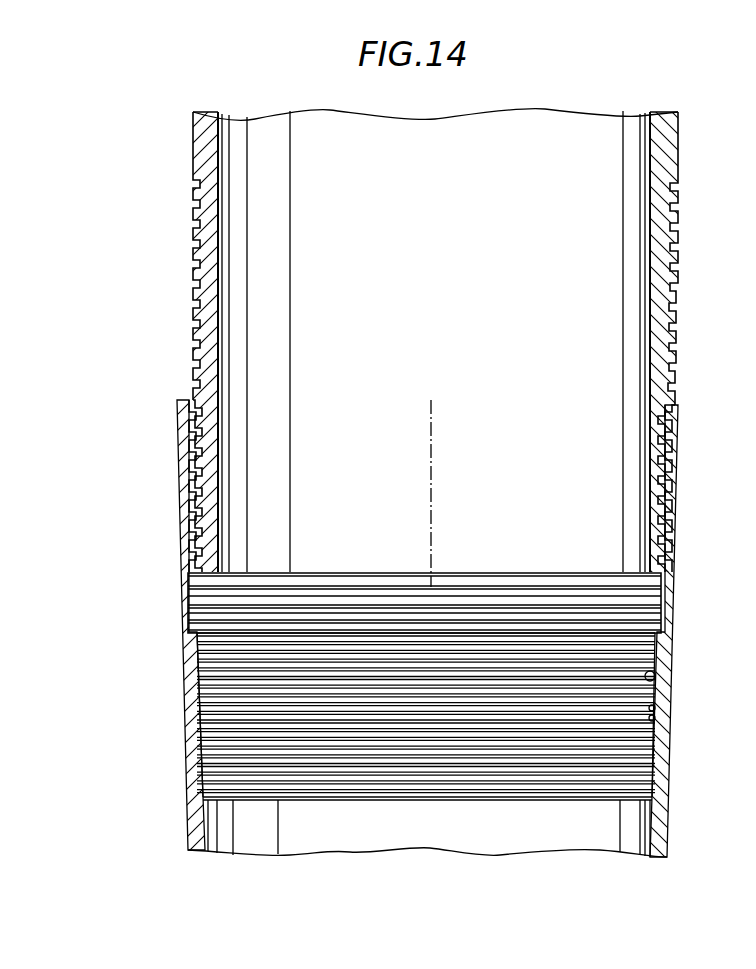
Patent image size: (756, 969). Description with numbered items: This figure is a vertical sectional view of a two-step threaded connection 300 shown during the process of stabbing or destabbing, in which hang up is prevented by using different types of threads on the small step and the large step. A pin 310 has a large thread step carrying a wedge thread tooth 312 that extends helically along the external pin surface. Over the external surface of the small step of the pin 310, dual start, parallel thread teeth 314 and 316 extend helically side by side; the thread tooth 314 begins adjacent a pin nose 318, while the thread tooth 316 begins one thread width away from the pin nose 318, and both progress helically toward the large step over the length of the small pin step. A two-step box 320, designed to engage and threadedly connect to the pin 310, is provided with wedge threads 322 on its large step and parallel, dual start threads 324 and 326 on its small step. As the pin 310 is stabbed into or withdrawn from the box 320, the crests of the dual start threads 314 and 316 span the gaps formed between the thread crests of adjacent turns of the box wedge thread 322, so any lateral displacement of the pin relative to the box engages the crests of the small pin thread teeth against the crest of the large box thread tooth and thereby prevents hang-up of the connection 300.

The connection 300 is at (165, 178).
The pin 310 is at (593, 160).
The wedge thread tooth 312 is at (673, 233).
The thread tooth 314 is at (215, 508).
The thread tooth 316 is at (215, 498).
The pin nose 318 is at (490, 578).
The two-step box 320 is at (610, 833).
The wedge threads 322 is at (196, 462).
The dual start thread 324 is at (652, 679).
The dual start thread 326 is at (652, 722).